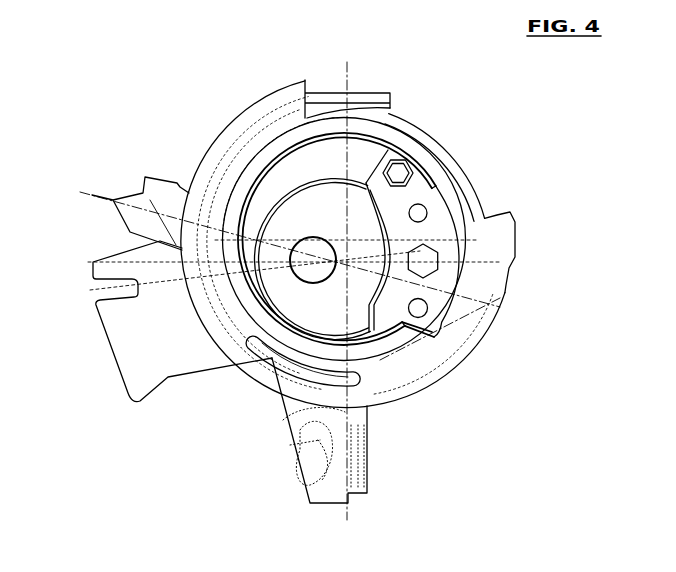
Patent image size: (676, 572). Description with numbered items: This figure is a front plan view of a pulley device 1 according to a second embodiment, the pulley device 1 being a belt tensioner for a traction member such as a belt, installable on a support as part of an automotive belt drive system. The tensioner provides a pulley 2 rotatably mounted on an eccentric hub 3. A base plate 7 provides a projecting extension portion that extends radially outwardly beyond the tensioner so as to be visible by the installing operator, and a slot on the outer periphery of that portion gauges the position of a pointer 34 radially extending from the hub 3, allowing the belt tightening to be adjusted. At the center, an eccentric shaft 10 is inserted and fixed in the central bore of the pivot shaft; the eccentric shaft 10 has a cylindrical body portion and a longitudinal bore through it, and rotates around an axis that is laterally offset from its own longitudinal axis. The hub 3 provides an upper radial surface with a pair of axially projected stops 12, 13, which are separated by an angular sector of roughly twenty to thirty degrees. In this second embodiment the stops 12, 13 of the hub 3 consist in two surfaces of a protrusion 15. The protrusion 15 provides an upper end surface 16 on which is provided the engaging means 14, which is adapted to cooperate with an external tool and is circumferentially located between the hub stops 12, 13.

The pulley device 1 is at (187, 127).
The pulley 2 is at (260, 378).
The eccentric hub 3 is at (326, 162).
The base plate 7 is at (100, 345).
The eccentric shaft 10 is at (308, 207).
The stop 12 is at (437, 198).
The stop 13 is at (366, 152).
The engaging means 14 is at (425, 165).
The protrusion 15 is at (397, 132).
The upper end surface 16 is at (432, 172).
The pointer 34 is at (123, 193).